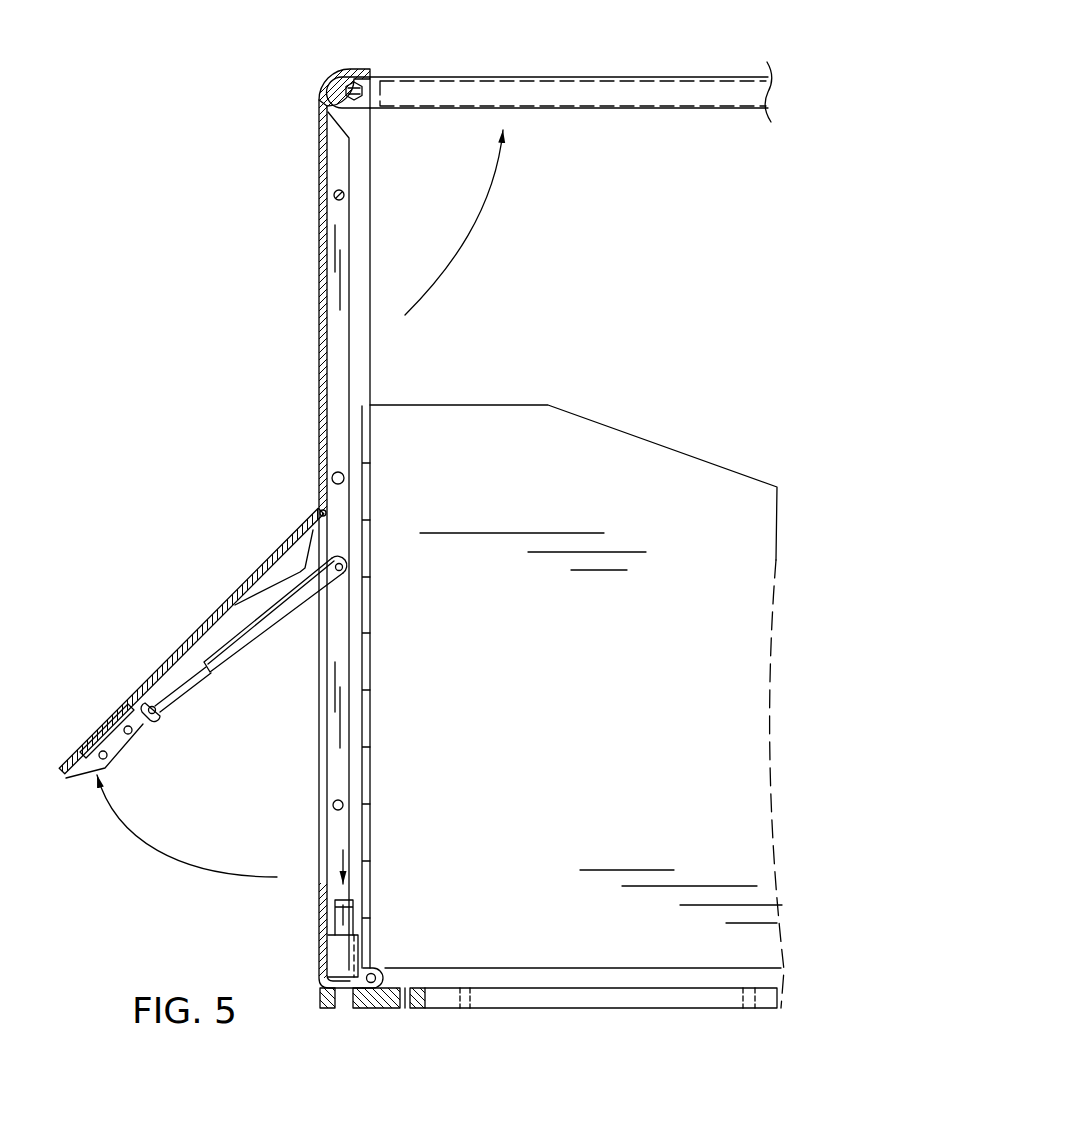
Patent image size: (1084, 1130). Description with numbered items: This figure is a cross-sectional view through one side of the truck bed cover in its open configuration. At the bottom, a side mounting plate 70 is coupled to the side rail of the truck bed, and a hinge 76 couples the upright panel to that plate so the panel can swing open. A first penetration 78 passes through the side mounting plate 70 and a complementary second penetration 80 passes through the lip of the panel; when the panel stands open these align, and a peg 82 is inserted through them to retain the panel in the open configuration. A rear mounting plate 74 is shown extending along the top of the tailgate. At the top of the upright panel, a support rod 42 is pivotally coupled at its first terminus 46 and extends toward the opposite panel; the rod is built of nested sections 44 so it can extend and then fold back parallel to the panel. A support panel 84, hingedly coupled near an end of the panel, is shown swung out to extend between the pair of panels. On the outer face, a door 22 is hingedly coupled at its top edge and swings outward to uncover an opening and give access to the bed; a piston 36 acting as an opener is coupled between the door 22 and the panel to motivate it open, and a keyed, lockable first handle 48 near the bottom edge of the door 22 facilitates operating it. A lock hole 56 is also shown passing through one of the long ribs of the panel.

The door 22 is at (186, 645).
The piston 36 is at (286, 617).
The support rod 42 is at (441, 75).
The nested sections 44 is at (566, 75).
The first terminus 46 is at (366, 101).
The first handle 48 is at (93, 728).
The lock hole 56 is at (328, 805).
The side mounting plate 70 is at (381, 1005).
The rear mounting plate 74 is at (523, 999).
The hinge 76 is at (375, 970).
The first penetration 78 is at (341, 977).
The second penetration 80 is at (345, 1000).
The peg 82 is at (336, 915).
The support panel 84 is at (622, 432).